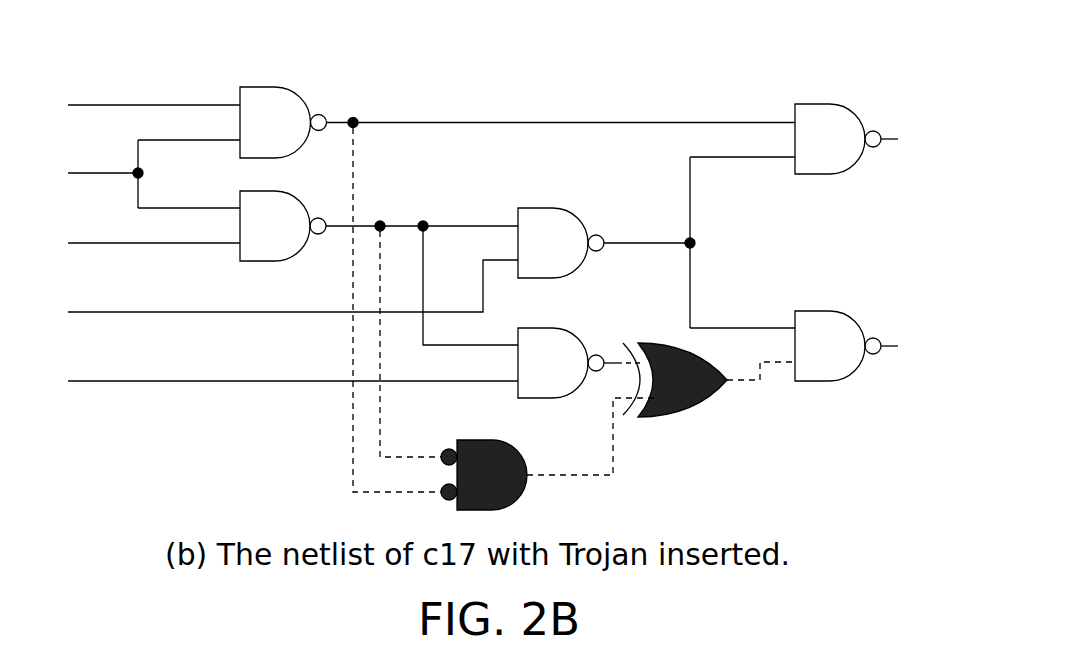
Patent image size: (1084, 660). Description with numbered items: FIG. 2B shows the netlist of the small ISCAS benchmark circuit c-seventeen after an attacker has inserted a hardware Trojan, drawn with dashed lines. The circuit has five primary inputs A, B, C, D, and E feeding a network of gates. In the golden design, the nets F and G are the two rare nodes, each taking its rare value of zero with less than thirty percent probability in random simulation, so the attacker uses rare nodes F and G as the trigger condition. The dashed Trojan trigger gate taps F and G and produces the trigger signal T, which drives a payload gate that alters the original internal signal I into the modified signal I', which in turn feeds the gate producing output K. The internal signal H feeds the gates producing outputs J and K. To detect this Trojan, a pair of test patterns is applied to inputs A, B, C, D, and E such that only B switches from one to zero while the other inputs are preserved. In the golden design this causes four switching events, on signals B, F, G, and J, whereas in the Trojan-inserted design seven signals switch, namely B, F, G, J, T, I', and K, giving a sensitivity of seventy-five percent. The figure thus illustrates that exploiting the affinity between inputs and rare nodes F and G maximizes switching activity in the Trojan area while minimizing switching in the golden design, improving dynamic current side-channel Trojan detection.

The input A is at (142, 96).
The input B is at (142, 174).
The input C is at (142, 236).
The input D is at (281, 289).
The input E is at (281, 372).
The rare node F is at (561, 283).
The rare node G is at (422, 321).
The signal H is at (699, 242).
The signal I is at (622, 340).
The signal I' is at (761, 361).
The output J is at (902, 139).
The output K is at (906, 339).
The Trojan trigger signal T is at (548, 454).